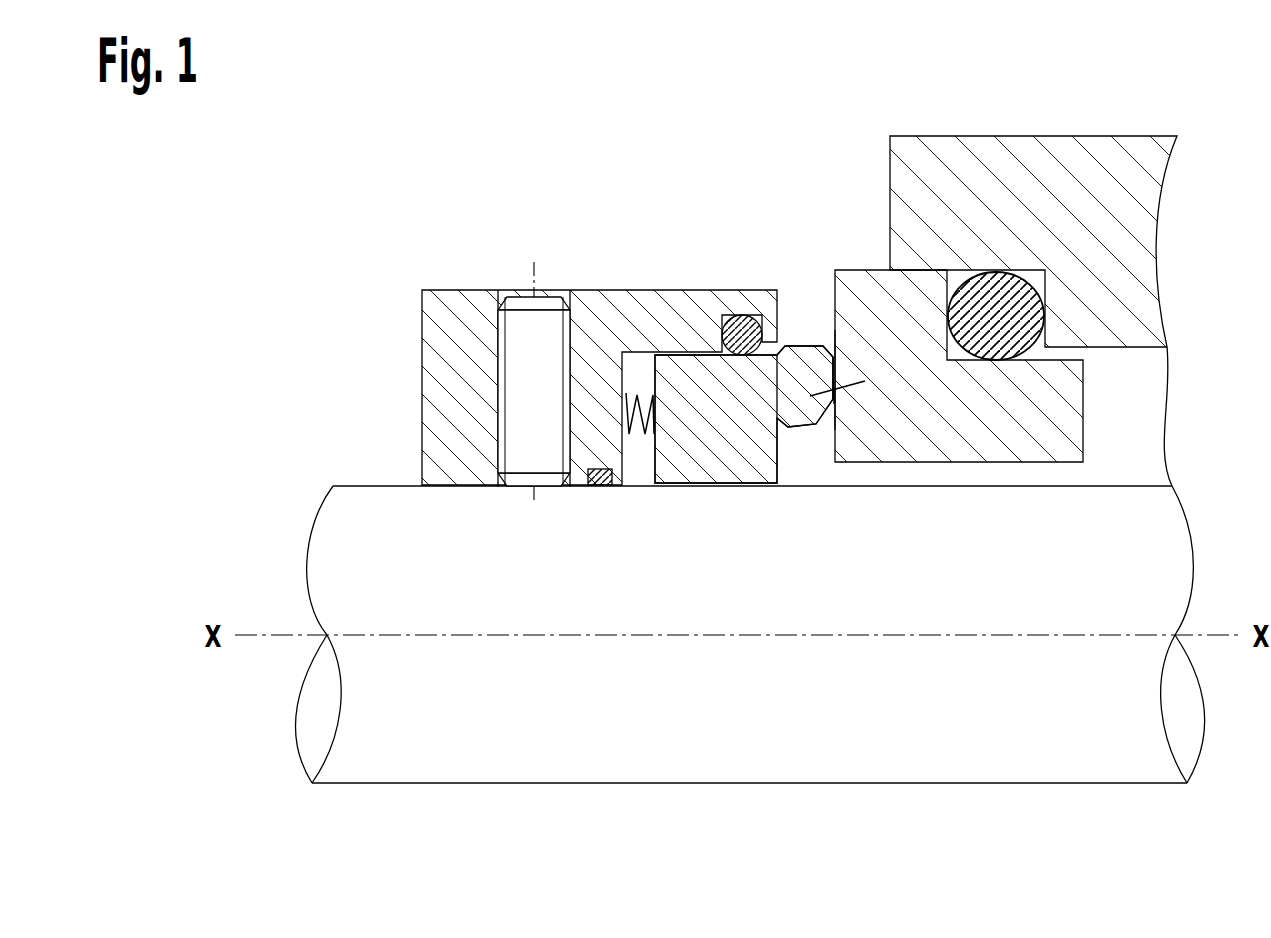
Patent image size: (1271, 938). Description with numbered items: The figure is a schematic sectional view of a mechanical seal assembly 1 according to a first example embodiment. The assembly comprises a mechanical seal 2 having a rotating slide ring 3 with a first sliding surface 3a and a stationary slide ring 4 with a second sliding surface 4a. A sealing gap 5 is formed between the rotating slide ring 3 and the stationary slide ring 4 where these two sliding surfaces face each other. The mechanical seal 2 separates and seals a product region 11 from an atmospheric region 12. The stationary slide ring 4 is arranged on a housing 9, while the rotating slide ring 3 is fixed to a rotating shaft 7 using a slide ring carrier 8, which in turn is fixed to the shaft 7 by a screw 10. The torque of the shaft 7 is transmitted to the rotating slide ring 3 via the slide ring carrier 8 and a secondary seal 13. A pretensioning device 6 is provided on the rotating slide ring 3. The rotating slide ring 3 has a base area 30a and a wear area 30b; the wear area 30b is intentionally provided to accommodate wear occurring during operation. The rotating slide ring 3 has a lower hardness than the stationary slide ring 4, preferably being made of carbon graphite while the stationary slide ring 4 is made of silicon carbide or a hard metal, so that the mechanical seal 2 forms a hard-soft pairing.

The mechanical seal assembly 1 is at (360, 180).
The mechanical seal 2 is at (806, 260).
The rotating slide ring 3 is at (765, 600).
The first sliding surface 3a is at (836, 396).
The stationary slide ring 4 is at (915, 530).
The second sliding surface 4a is at (835, 395).
The sealing gap 5 is at (836, 396).
The pretensioning device 6 is at (633, 393).
The rotating shaft 7 is at (1040, 723).
The slide ring carrier 8 is at (448, 330).
The housing 9 is at (1102, 245).
The screw 10 is at (518, 330).
The product region 11 is at (679, 193).
The atmospheric region 12 is at (1117, 441).
The secondary seal 13 is at (745, 333).
The base area 30a is at (715, 445).
The wear area 30b is at (792, 393).